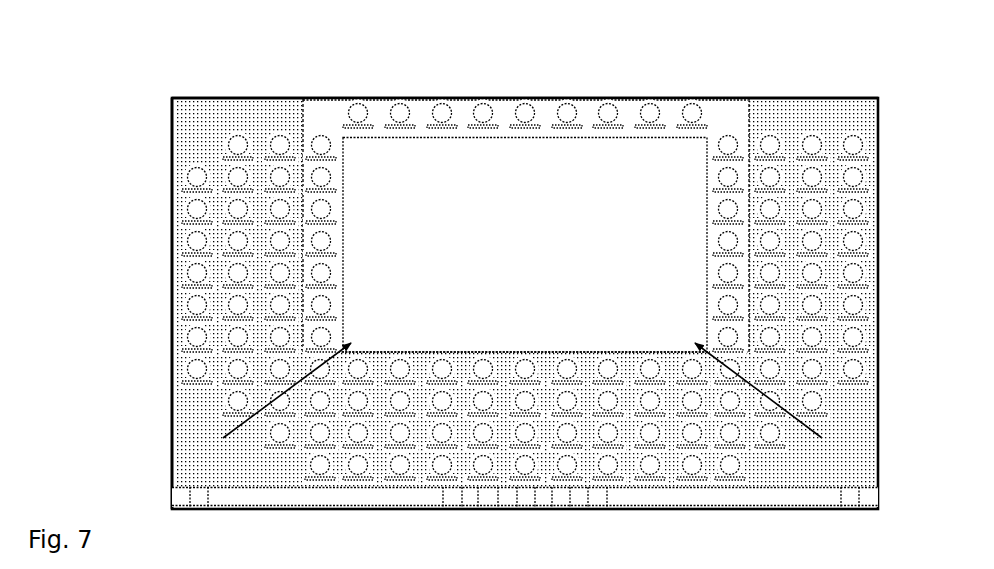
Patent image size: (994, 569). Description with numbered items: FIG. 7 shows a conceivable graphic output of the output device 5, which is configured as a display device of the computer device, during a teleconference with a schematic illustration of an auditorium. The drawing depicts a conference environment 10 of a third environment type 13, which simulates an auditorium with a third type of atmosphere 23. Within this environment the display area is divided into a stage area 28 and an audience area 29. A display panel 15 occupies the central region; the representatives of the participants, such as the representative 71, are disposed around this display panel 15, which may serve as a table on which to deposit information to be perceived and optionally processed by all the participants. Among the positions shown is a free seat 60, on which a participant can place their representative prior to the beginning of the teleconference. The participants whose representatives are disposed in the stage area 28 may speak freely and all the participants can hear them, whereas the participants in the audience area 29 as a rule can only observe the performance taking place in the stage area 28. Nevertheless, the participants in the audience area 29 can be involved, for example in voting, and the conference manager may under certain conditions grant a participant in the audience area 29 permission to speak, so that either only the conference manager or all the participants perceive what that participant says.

The output device 5 is at (137, 107).
The conference environment 10 is at (880, 98).
The third environment type 13 is at (189, 67).
The display panel 15 is at (436, 176).
The third type of atmosphere 23 is at (247, 513).
The stage area 28 is at (324, 111).
The audience area 29 is at (803, 116).
The free seat 60 is at (854, 172).
The representative 71 is at (530, 110).